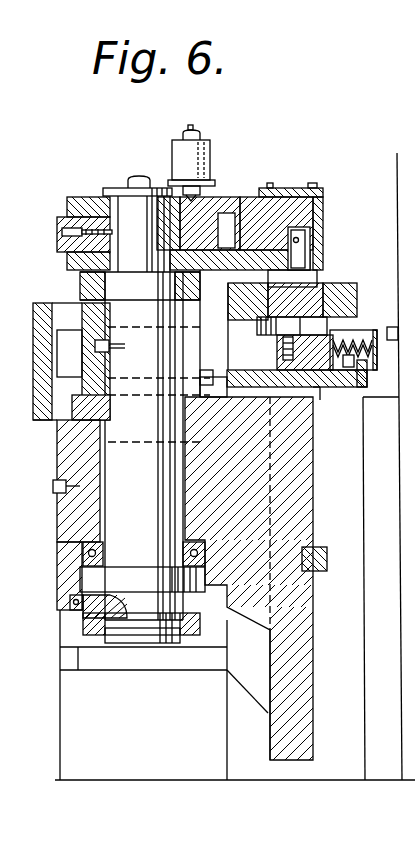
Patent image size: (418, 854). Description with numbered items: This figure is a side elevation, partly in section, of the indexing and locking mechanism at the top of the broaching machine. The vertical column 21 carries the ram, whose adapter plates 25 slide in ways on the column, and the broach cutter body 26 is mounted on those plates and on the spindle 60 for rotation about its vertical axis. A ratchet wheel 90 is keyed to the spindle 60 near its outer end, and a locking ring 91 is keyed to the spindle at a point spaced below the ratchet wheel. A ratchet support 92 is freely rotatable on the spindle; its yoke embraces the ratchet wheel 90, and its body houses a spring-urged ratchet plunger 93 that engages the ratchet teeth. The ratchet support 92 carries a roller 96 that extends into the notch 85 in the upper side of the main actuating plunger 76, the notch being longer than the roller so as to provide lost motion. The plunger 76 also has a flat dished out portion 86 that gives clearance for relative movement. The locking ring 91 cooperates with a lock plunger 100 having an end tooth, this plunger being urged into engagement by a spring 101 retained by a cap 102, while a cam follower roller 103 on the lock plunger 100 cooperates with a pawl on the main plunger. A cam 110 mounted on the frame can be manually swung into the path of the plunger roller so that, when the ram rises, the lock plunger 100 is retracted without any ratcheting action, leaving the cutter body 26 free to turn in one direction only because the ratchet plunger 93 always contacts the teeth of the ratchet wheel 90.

The column 21 is at (386, 548).
The adapter plates 25 is at (300, 696).
The broach cutter body 26 is at (72, 737).
The spindle 60 is at (117, 443).
The main actuating plunger 76 is at (350, 290).
The notch 85 is at (323, 273).
The dished out portion 86 is at (328, 280).
The ratchet wheel 90 is at (67, 216).
The locking ring 91 is at (73, 358).
The ratchet support 92 is at (230, 200).
The ratchet plunger 93 is at (247, 203).
The roller 96 is at (327, 268).
The lock plunger 100 is at (255, 362).
The spring 101 is at (381, 348).
The cap 102 is at (382, 375).
The cam follower roller 103 is at (358, 303).
The cam 110 is at (0, 278).